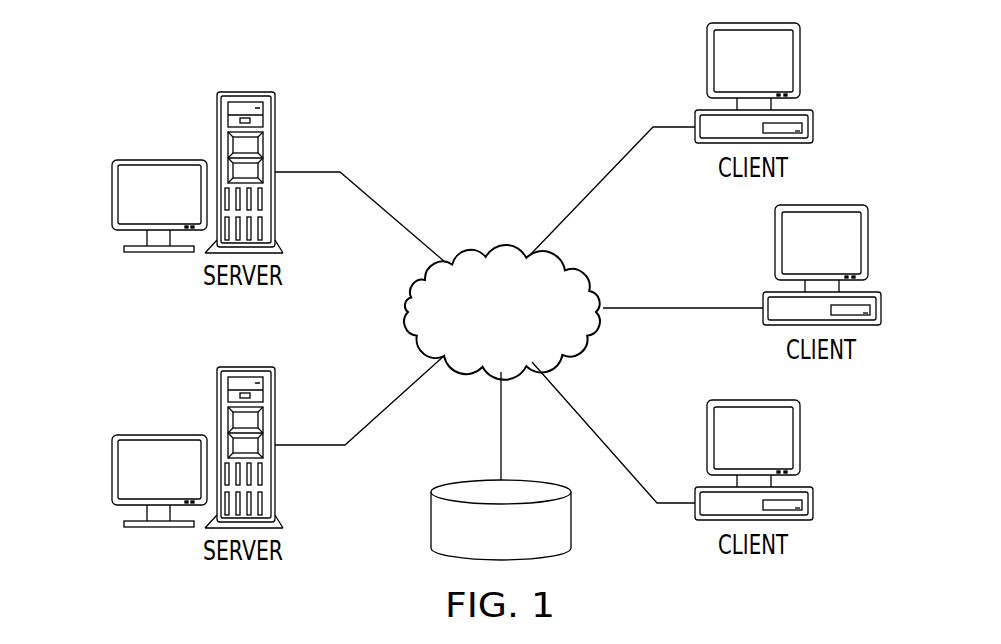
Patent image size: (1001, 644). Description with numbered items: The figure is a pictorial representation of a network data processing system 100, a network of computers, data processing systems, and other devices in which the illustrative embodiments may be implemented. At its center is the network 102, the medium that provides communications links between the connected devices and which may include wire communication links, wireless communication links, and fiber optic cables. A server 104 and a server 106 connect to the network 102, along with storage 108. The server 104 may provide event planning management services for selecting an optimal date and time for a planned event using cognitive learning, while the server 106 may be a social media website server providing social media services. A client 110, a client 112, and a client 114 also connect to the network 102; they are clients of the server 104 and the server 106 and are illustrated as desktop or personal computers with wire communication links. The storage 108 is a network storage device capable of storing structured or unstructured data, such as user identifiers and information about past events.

The network data processing system 100 is at (350, 66).
The network 102 is at (496, 250).
The server 104 is at (112, 193).
The server 106 is at (112, 468).
The storage 108 is at (433, 520).
The client 110 is at (813, 117).
The client 112 is at (882, 300).
The client 114 is at (813, 513).